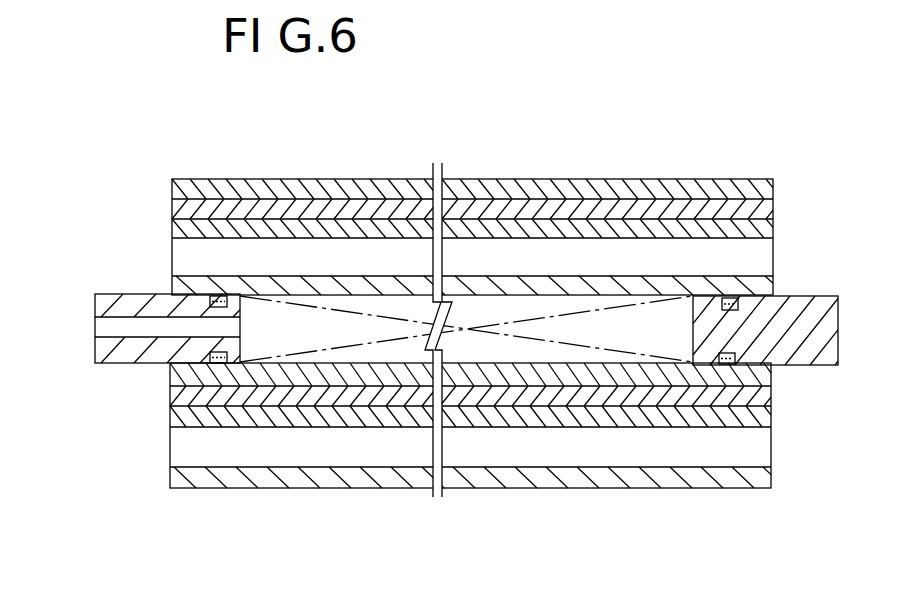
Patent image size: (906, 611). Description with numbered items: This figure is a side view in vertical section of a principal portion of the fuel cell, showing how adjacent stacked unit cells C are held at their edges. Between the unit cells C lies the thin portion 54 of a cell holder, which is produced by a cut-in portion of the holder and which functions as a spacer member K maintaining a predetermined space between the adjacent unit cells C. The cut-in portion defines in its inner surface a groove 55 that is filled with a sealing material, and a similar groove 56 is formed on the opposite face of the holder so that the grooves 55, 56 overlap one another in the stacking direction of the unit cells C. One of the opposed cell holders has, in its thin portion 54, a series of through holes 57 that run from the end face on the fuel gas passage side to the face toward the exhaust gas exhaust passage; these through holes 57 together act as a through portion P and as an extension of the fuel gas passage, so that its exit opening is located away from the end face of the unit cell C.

The unit cell C is at (271, 172).
The thin portion 54 is at (93, 364).
The groove 55 is at (216, 295).
The groove 56 is at (213, 363).
The through holes 57 is at (95, 325).